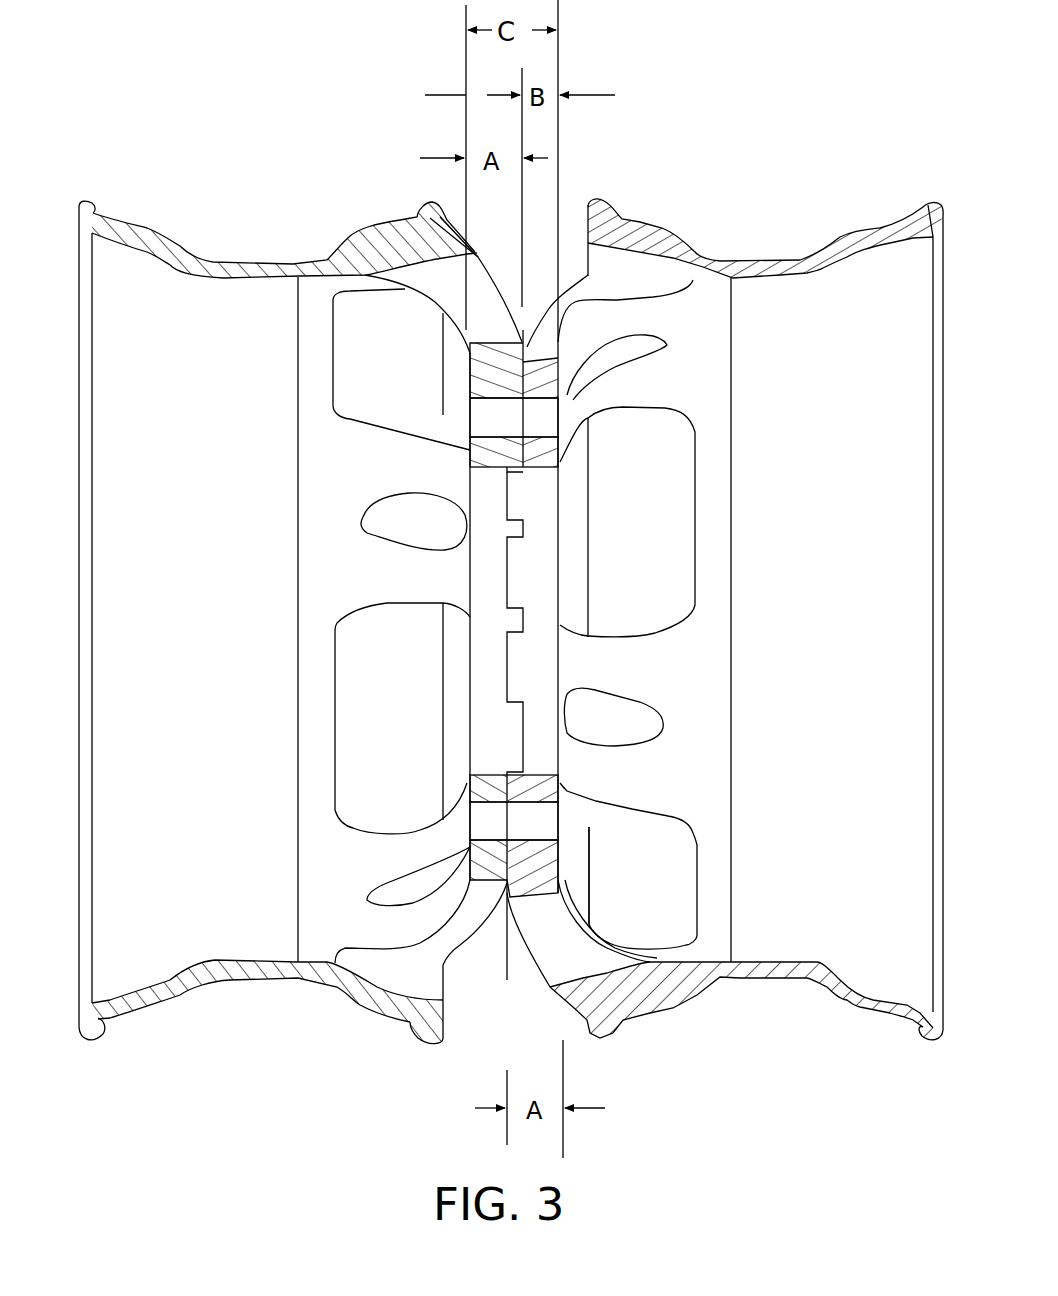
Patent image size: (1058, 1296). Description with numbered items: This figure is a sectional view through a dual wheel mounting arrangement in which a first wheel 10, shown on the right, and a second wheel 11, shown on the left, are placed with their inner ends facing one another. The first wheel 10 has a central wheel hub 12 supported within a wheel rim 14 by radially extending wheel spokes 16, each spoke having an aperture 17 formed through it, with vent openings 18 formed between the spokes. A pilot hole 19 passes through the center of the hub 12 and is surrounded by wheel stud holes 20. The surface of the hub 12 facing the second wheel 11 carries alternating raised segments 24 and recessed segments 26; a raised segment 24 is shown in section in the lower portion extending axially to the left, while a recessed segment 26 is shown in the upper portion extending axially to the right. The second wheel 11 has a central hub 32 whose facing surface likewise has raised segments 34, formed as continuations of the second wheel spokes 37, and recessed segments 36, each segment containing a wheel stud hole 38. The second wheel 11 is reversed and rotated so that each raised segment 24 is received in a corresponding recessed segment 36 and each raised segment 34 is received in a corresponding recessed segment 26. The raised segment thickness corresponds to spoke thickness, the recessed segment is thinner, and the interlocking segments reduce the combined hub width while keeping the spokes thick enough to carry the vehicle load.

The first wheel 10 is at (746, 578).
The second wheel 11 is at (276, 166).
The wheel hub 12 is at (547, 593).
The wheel rim 14 is at (775, 262).
The wheel spokes 16 is at (672, 396).
The aperture 17 is at (618, 735).
The vent openings 18 is at (672, 486).
The pilot hole 19 is at (606, 545).
The wheel stud holes 20 is at (566, 412).
The raised segments 24 is at (560, 775).
The recessed segments 26 is at (543, 456).
The second wheel hub 32 is at (478, 667).
The raised segments 34 is at (477, 380).
The recessed segments 36 is at (500, 700).
The second wheel spokes 37 is at (398, 489).
The wheel stud holes 38 is at (463, 422).